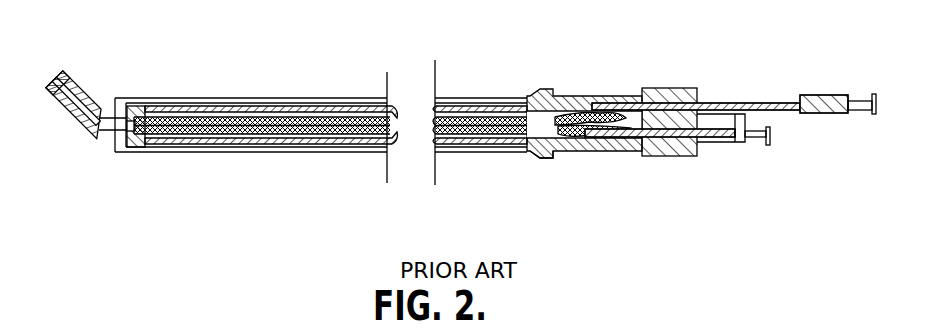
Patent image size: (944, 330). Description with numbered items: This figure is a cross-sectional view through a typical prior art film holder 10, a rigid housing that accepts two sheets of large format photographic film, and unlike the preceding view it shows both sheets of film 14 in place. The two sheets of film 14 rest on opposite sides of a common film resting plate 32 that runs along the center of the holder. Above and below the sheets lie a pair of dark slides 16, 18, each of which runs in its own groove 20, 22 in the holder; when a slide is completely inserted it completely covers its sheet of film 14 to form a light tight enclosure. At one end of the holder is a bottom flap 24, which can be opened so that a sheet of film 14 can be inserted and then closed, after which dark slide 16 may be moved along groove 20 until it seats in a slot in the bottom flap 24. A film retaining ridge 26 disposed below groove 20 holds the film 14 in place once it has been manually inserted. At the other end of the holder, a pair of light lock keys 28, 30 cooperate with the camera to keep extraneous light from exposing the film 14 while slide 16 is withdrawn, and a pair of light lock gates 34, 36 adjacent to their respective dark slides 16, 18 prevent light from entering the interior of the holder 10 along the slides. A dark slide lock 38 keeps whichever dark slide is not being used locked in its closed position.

The film holder 10 is at (336, 202).
The sheet of film 14 is at (333, 108).
The dark slide 16 is at (737, 102).
The dark slide 18 is at (715, 142).
The groove 20 is at (178, 113).
The groove 22 is at (58, 75).
The bottom flap 24 is at (87, 93).
The film retaining ridge 26 is at (220, 118).
The light lock key 28 is at (535, 93).
The light lock key 30 is at (538, 158).
The common film resting plate 32 is at (288, 120).
The light lock gate 34 is at (600, 108).
The light lock gate 36 is at (592, 143).
The dark slide lock 38 is at (745, 120).